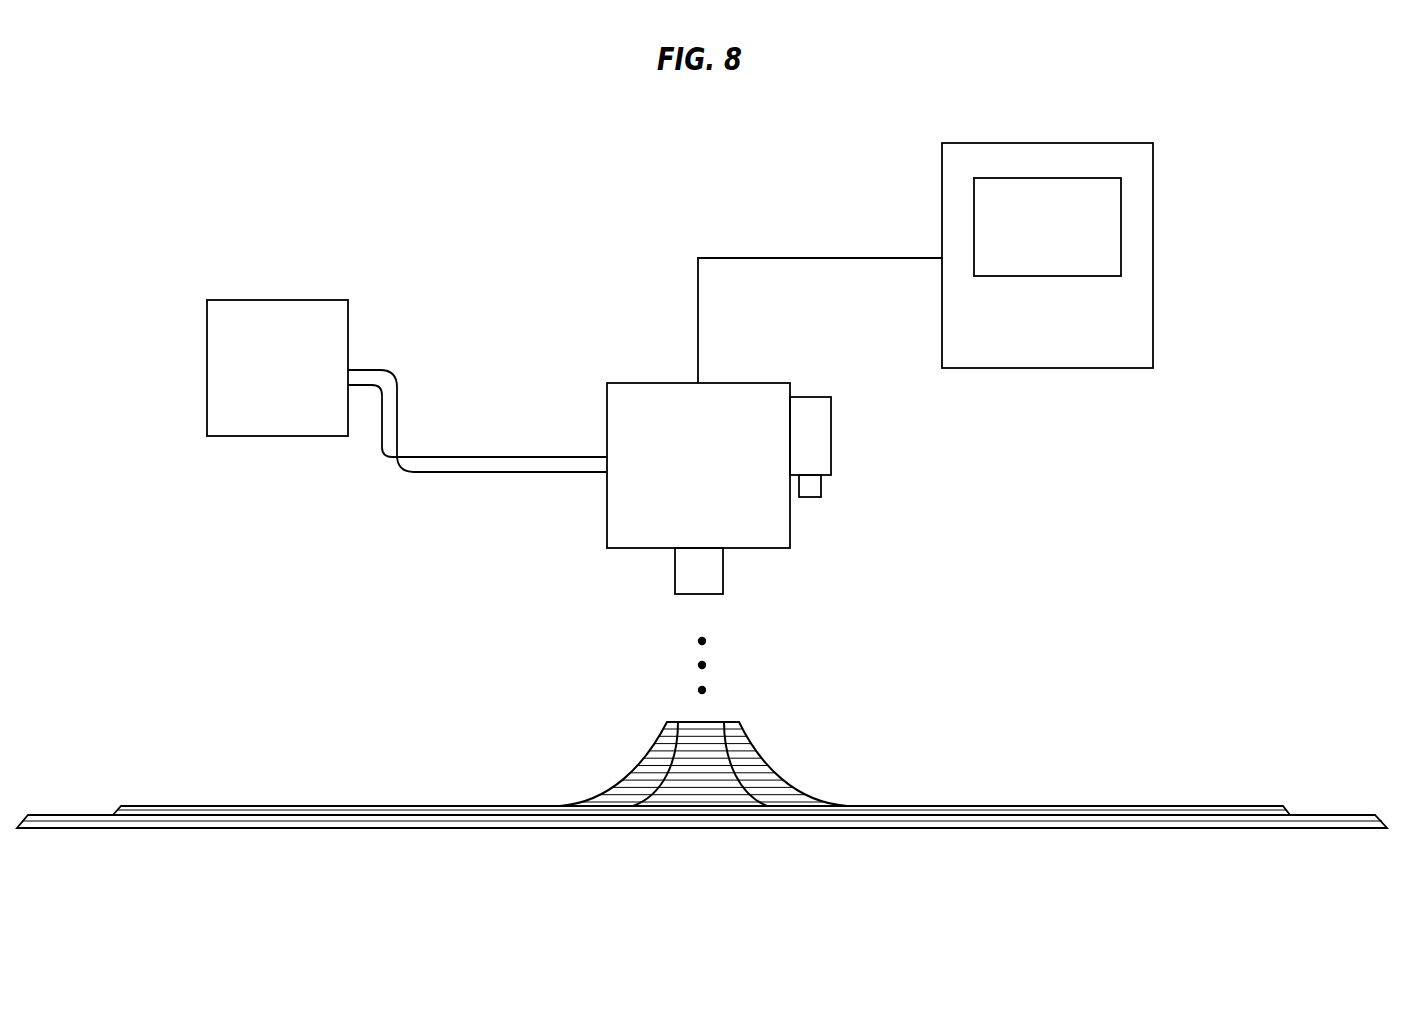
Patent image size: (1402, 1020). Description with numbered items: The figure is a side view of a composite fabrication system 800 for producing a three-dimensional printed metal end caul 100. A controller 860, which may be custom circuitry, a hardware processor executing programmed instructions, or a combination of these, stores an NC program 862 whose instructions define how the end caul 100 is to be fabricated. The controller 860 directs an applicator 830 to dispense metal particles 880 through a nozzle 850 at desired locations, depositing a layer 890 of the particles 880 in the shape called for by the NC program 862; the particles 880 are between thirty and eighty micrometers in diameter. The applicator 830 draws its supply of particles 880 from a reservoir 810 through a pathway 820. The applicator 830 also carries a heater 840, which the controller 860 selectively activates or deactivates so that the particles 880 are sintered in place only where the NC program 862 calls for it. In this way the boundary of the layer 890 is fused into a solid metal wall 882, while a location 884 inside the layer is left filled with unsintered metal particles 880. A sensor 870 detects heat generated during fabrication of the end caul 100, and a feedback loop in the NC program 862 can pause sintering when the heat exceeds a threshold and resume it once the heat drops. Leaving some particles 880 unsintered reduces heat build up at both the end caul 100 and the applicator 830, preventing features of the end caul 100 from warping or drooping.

The end caul 100 is at (483, 722).
The composite fabrication system 800 is at (975, 484).
The reservoir 810 is at (258, 404).
The pathway 820 is at (502, 456).
The applicator 830 is at (679, 496).
The heater 840 is at (831, 410).
The nozzle 850 is at (675, 572).
The controller 860 is at (1028, 347).
The NC program 862 is at (1028, 254).
The sensor 870 is at (821, 488).
The particles 880 is at (708, 666).
The wall 882 is at (671, 727).
The location 884 is at (719, 710).
The layer 890 is at (742, 735).